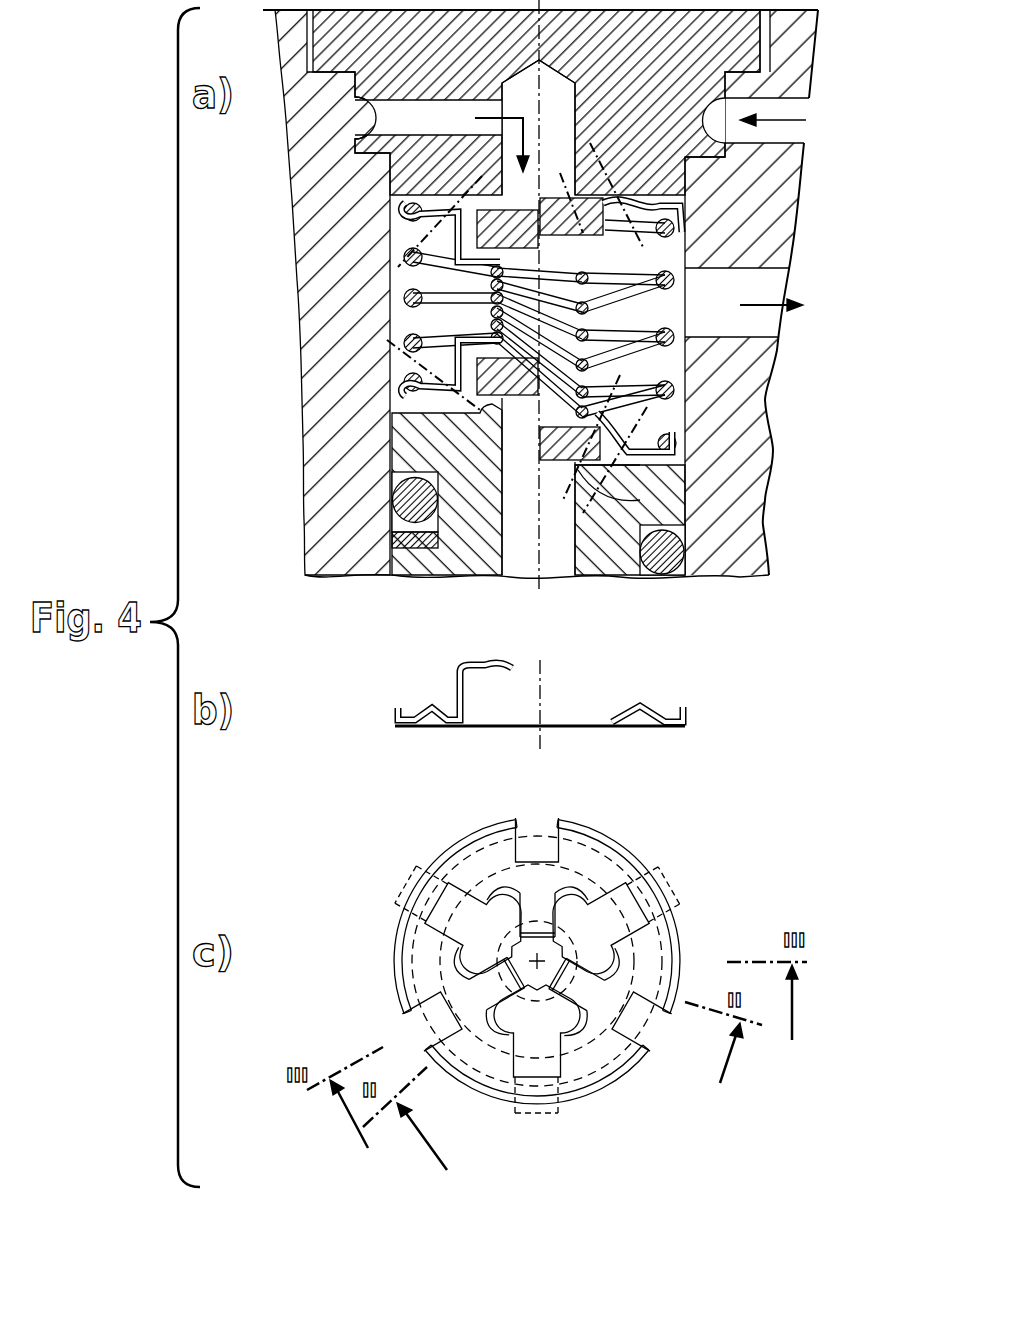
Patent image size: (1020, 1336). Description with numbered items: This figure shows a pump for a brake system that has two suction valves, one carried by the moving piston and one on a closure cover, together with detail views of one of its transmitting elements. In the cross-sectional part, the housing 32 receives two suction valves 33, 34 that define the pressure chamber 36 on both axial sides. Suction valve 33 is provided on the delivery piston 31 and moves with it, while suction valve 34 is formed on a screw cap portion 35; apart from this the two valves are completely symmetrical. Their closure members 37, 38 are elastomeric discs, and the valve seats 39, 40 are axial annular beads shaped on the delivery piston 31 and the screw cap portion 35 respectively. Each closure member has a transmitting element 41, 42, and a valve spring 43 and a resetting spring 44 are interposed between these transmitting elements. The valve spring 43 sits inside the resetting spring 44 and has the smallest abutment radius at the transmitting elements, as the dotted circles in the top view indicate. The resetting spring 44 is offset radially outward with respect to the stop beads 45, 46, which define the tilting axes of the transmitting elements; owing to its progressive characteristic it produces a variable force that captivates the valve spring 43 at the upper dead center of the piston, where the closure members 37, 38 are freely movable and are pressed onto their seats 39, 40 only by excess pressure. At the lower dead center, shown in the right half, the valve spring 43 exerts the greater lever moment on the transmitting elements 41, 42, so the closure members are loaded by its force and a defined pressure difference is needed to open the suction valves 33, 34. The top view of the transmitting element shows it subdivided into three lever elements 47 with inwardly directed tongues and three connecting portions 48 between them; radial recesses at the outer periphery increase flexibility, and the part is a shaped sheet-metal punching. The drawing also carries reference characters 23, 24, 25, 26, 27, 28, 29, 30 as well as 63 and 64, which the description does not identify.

The inlet channel 23 is at (578, 142).
The valve seat insert 24 is at (770, 63).
The lower spring collar 25 is at (620, 385).
The lower right collar 26 is at (605, 436).
The upper retainer hook 27 is at (455, 182).
The spring coil 28 is at (525, 268).
The spring coil 29 is at (470, 330).
The lower retainer hook 30 is at (430, 388).
The delivery piston 31 is at (605, 548).
The housing 32 is at (730, 553).
The suction valve 33 is at (625, 412).
The suction valve 34 is at (610, 248).
The screw cap portion 35 is at (733, 43).
The pressure chamber 36 is at (655, 318).
The closure member 37 is at (625, 400).
The closure member 38 is at (640, 272).
The valve seat 39 is at (665, 500).
The valve seat 40 is at (705, 140).
The transmitting element 41 is at (552, 722).
The transmitting element 42 is at (550, 206).
The valve spring 43 is at (630, 360).
The resetting spring 44 is at (672, 287).
The stop bead 45 is at (645, 478).
The stop bead 46 is at (605, 173).
The lever element 47 is at (558, 877).
The connecting portion 48 is at (437, 893).
The inner finger 63 is at (540, 920).
The tab 64 is at (542, 847).